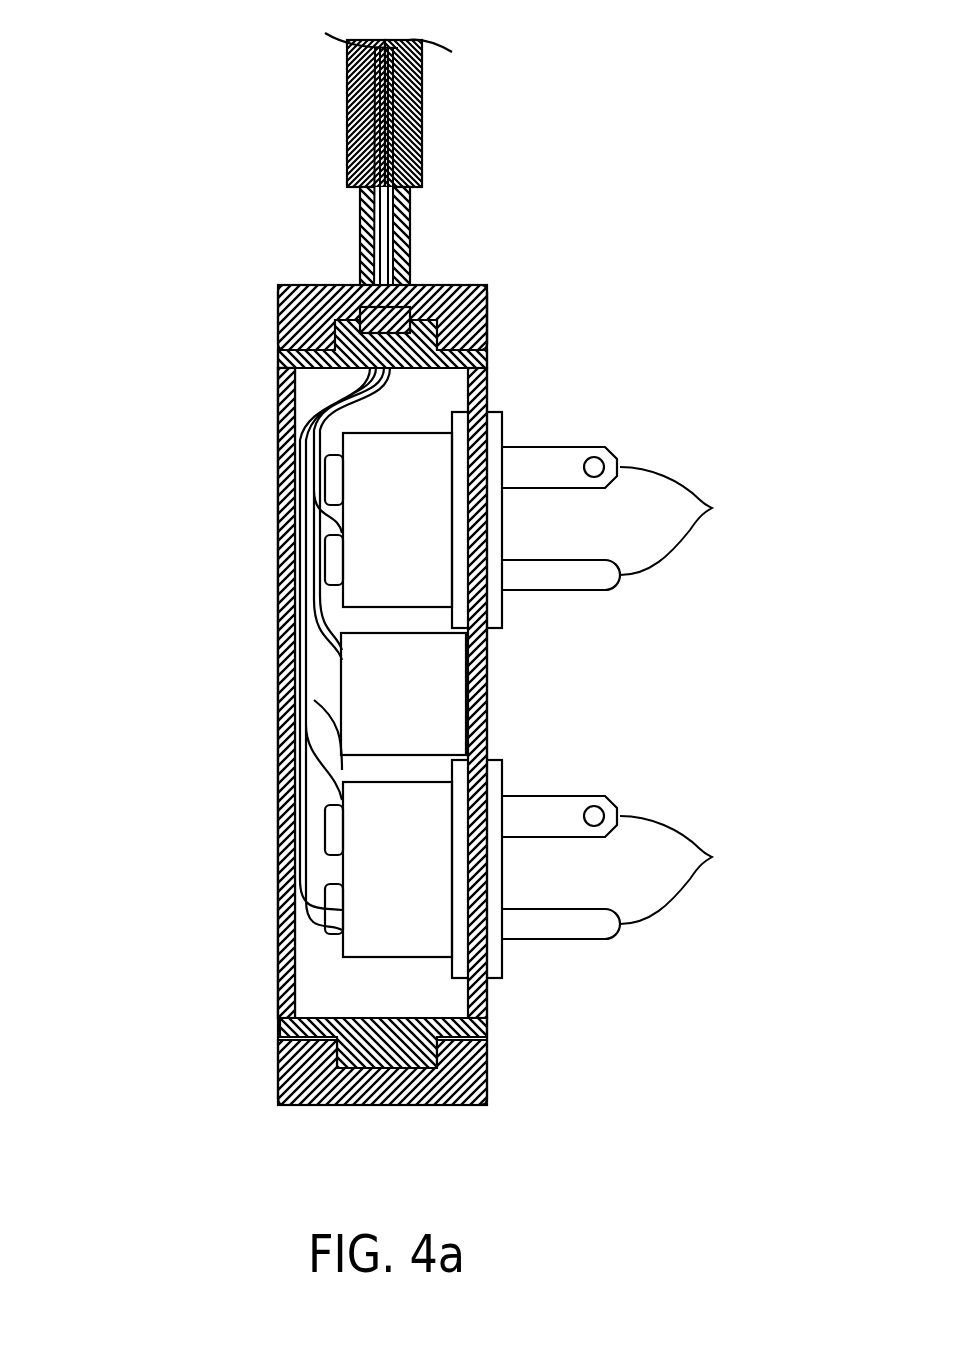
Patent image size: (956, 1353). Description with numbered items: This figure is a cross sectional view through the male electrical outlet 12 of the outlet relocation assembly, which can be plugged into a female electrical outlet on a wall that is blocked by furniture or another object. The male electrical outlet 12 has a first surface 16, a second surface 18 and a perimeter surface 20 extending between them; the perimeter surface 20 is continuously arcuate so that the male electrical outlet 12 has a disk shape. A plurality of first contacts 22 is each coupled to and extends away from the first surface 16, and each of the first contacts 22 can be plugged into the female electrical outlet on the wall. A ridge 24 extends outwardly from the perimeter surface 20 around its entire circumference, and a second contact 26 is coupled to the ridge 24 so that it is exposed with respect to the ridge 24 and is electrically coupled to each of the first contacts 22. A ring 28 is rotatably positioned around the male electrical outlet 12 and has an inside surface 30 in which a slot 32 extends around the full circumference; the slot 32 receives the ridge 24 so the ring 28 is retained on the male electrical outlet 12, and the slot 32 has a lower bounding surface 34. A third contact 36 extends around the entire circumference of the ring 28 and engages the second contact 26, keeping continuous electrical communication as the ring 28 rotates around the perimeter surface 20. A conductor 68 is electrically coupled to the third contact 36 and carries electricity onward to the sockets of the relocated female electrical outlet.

The male electrical outlet 12 is at (172, 420).
The first surface 16 is at (490, 388).
The second surface 18 is at (280, 478).
The perimeter surface 20 is at (308, 285).
The first contacts 22 is at (712, 508).
The ridge 24 is at (490, 312).
The second contact 26 is at (290, 384).
The ring 28 is at (480, 285).
The inside surface 30 is at (292, 1034).
The slot 32 is at (417, 1043).
The lower bounding surface 34 is at (345, 1018).
The third contact 36 is at (425, 287).
The conductor 68 is at (348, 93).